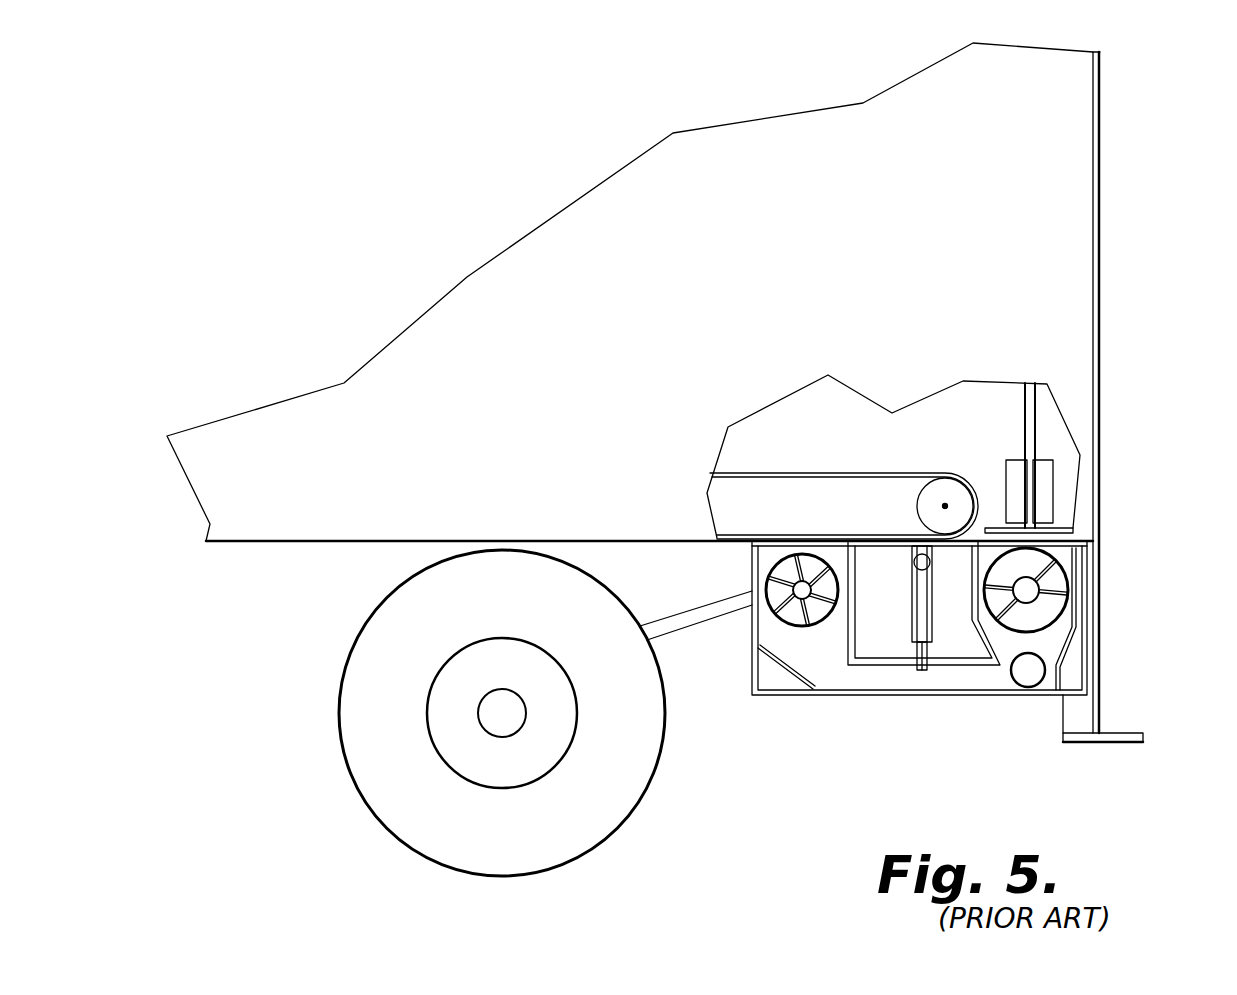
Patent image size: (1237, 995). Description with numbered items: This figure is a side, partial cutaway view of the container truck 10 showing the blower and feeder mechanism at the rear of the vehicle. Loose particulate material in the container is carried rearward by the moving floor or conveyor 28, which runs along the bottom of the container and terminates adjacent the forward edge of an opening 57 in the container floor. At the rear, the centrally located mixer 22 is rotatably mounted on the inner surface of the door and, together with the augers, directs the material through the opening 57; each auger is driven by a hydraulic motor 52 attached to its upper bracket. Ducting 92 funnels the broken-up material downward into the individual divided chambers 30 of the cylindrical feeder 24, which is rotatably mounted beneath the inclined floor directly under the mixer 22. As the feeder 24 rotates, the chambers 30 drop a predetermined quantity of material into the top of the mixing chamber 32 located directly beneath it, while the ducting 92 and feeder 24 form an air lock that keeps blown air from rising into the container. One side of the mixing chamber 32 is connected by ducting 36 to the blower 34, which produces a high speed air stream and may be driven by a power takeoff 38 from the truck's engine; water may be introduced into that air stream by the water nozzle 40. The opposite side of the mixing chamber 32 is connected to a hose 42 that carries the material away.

The container truck 10 is at (1105, 185).
The mixer 22 is at (1044, 411).
The cylindrical feeder 24 is at (1069, 562).
The moving floor or conveyor 28 is at (833, 473).
The divided chambers 30 is at (1055, 595).
The mixing chamber 32 is at (1054, 651).
The blower 34 is at (795, 618).
The ducting 36 is at (873, 678).
The power takeoff 38 is at (717, 614).
The water nozzle 40 is at (933, 665).
The hose 42 is at (1030, 680).
The hydraulic motor 52 is at (965, 498).
The opening 57 is at (1048, 545).
The ducting 92 is at (965, 567).